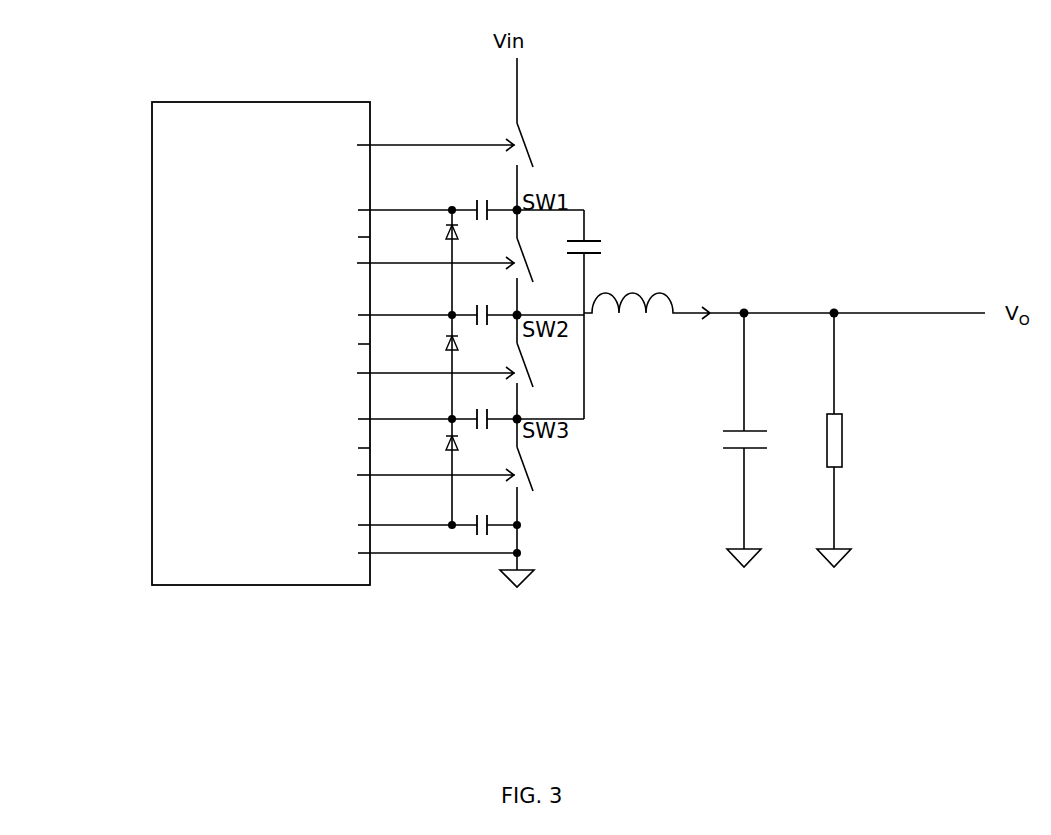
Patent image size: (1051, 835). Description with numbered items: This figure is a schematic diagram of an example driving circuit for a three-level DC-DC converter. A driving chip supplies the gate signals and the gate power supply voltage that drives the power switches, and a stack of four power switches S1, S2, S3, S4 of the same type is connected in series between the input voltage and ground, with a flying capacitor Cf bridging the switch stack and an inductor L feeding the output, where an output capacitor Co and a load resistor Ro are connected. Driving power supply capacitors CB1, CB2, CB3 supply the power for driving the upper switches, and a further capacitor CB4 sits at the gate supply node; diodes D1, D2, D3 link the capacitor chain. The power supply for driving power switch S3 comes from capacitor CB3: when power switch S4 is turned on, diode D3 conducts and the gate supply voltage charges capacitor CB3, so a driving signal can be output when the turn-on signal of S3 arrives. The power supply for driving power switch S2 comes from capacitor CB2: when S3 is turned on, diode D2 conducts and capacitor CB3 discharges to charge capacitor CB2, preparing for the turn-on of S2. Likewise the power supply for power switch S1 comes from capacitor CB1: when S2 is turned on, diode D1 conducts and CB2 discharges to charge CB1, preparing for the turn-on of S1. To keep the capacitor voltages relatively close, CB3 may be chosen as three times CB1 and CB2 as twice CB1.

The driving chip is at (261, 343).
The power switch S1 is at (545, 145).
The power switch S2 is at (545, 260).
The power switch S3 is at (545, 366).
The power switch S4 is at (545, 471).
The driving power supply capacitor CB1 is at (483, 198).
The driving power supply capacitor CB2 is at (483, 303).
The driving power supply capacitor CB3 is at (483, 407).
The bootstrap capacitor CB4 is at (483, 512).
The diode D1 is at (466, 236).
The diode D2 is at (466, 346).
The diode D3 is at (466, 446).
The flying capacitor Cf is at (603, 251).
The inductor L is at (784, 321).
The output capacitor Co is at (761, 440).
The load resistor Ro is at (845, 440).